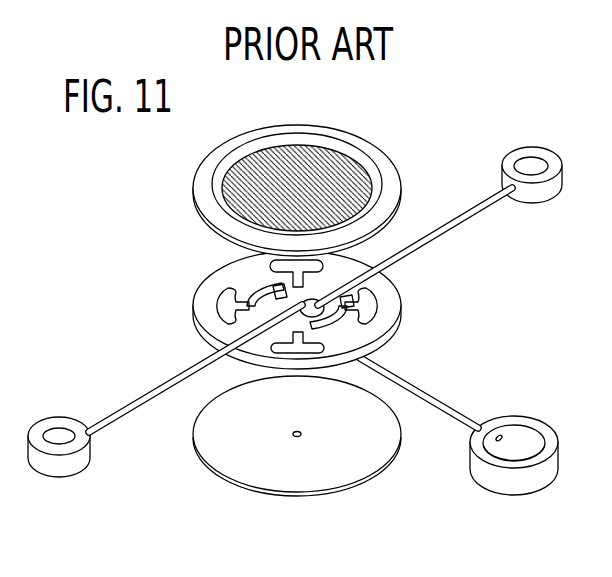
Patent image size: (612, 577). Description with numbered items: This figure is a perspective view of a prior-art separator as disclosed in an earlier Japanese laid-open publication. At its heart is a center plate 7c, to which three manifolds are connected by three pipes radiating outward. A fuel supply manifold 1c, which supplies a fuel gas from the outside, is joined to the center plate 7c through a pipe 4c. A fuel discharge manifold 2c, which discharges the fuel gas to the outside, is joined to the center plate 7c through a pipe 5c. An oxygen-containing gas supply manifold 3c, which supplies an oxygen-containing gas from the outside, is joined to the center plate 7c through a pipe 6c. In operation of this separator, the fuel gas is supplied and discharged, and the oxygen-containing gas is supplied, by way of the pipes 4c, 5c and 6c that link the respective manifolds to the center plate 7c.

The fuel supply manifold 1c is at (78, 457).
The fuel discharge manifold 2c is at (539, 192).
The oxygen-containing gas supply manifold 3c is at (478, 472).
The pipe 4c is at (132, 407).
The pipe 5c is at (445, 404).
The pipe 6c is at (463, 212).
The center plate 7c is at (212, 295).